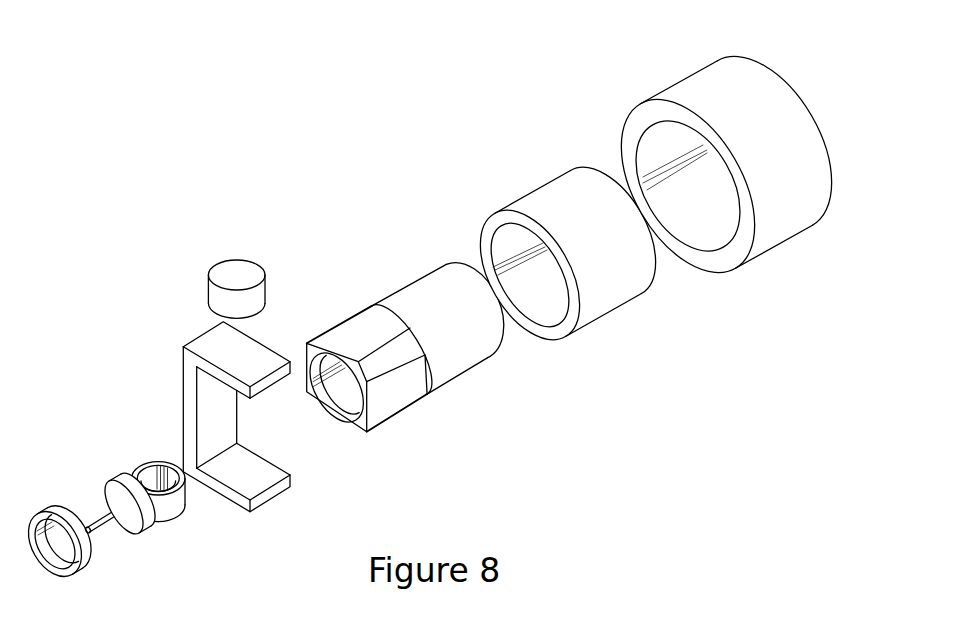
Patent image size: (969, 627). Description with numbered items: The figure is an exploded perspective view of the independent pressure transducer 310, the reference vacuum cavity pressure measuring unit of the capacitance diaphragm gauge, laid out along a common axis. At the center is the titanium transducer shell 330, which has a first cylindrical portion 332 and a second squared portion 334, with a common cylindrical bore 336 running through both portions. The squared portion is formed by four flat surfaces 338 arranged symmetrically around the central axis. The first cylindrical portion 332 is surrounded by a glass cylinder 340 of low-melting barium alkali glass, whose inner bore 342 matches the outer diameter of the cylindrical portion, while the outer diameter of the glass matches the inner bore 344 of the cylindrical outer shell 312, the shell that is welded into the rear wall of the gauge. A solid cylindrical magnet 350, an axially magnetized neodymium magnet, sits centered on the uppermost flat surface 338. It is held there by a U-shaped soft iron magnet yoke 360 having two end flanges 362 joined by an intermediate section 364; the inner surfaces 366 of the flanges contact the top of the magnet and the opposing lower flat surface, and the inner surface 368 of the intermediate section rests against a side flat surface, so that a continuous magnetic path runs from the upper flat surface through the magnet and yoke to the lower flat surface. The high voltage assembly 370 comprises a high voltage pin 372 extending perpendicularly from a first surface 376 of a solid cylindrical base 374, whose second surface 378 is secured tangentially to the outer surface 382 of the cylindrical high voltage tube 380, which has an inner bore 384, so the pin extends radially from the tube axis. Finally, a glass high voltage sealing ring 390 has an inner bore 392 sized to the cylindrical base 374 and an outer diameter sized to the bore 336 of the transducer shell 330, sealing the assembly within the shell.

The independent pressure transducer 310 is at (452, 438).
The cylindrical outer shell 312 is at (658, 92).
The transducer shell 330 is at (398, 282).
The first cylindrical portion 332 is at (422, 282).
The second squared portion 334 is at (346, 325).
The cylindrical bore 336 is at (332, 402).
The flat surfaces 338 is at (340, 323).
The glass cylinder 340 is at (522, 192).
The inner bore 342 is at (535, 305).
The inner bore 344 is at (692, 222).
The solid cylindrical magnet 350 is at (208, 258).
The magnet yoke 360 is at (186, 335).
The end flanges 362 is at (267, 381).
The intermediate section 364 is at (189, 406).
The inner surfaces 366 is at (238, 393).
The inner surface 368 is at (236, 440).
The high voltage assembly 370 is at (118, 463).
The high voltage pin 372 is at (105, 522).
The solid cylindrical base 374 is at (153, 520).
The first surface 376 is at (115, 493).
The second surface 378 is at (148, 473).
The high voltage tube 380 is at (175, 512).
The outer surface 382 is at (183, 497).
The inner bore 384 is at (160, 465).
The high voltage sealing ring 390 is at (40, 503).
The inner bore 392 is at (57, 563).